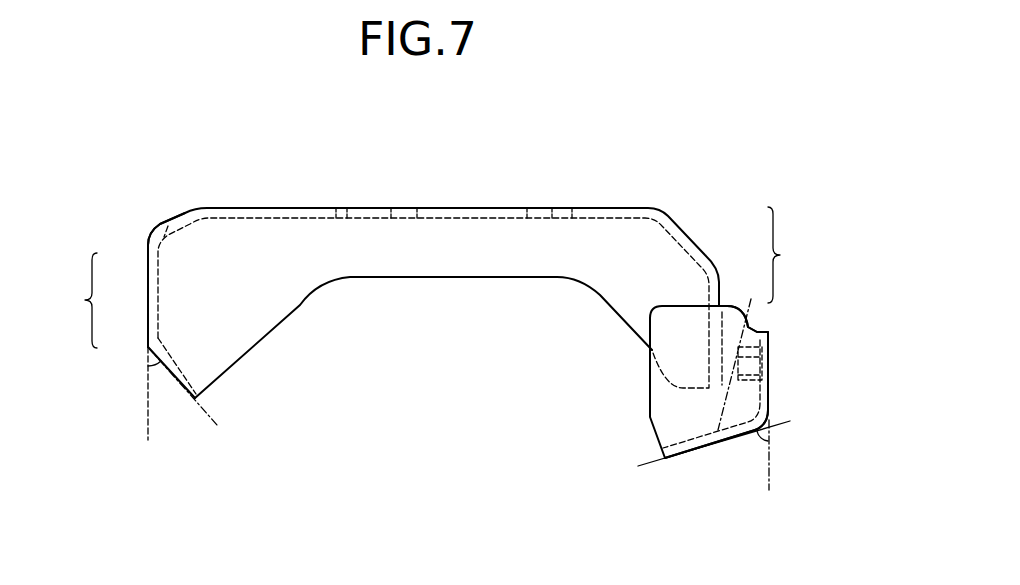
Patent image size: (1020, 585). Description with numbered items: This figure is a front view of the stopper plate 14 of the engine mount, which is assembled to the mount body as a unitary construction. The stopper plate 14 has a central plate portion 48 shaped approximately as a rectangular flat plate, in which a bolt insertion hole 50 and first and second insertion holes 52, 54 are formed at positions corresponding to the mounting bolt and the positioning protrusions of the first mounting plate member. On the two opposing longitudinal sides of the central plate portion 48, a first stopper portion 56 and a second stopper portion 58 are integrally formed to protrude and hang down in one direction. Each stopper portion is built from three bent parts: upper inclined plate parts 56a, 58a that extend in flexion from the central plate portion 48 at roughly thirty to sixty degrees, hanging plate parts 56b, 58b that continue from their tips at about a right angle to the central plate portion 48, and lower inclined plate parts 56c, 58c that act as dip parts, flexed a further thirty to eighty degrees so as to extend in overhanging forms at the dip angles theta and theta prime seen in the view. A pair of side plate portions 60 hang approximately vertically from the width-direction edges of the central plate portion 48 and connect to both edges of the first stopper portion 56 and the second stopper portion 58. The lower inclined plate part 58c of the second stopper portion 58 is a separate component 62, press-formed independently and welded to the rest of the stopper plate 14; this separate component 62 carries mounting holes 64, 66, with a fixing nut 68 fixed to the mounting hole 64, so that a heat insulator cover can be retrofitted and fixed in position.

The stopper plate 14 is at (693, 136).
The central plate portion 48 is at (303, 215).
The bolt insertion hole 50 is at (432, 208).
The first insertion hole 52 is at (552, 213).
The second insertion hole 54 is at (347, 213).
The first stopper portion 56 is at (138, 326).
The upper inclined plate part 56a is at (150, 240).
The hanging plate part 56b is at (149, 297).
The lower inclined plate part 56c is at (181, 370).
The second stopper portion 58 is at (730, 332).
The upper inclined plate part 58a is at (695, 245).
The hanging plate part 58b is at (722, 312).
The lower inclined plate part 58c is at (746, 354).
The side plate portion 60 is at (461, 258).
The separate component 62 is at (694, 452).
The mounting hole 64 is at (763, 378).
The mounting hole 66 is at (766, 409).
The fixing nut 68 is at (763, 330).